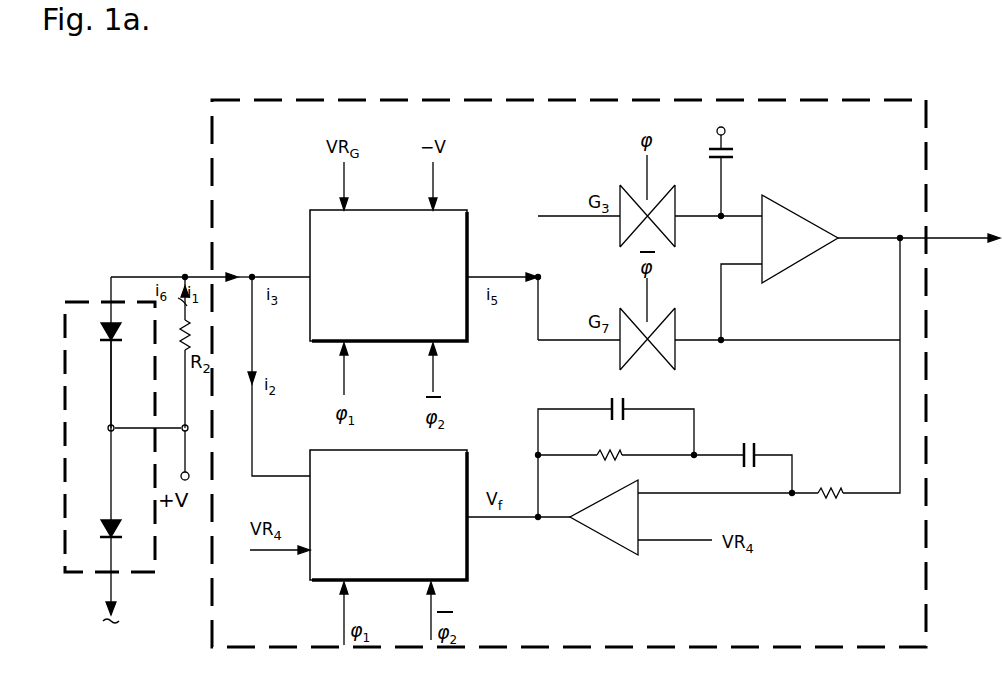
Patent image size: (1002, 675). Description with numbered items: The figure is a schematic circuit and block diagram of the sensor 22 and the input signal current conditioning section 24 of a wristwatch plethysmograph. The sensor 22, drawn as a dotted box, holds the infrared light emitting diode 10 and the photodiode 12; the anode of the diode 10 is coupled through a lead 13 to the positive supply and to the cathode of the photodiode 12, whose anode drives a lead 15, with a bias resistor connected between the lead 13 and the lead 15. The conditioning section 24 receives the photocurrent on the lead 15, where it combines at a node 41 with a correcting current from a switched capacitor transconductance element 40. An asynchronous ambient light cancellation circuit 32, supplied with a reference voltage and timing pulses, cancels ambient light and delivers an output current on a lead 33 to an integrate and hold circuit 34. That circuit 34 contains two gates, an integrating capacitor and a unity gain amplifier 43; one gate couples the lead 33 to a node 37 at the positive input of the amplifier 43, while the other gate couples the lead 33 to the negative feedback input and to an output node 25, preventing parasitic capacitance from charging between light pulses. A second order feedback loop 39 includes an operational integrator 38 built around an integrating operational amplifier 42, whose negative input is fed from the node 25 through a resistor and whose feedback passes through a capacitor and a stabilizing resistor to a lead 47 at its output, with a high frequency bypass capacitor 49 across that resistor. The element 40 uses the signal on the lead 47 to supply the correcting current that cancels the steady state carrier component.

The infrared light emitting diode 10 is at (117, 519).
The photodiode 12 is at (118, 341).
The lead 13 is at (110, 384).
The lead 15 is at (198, 275).
The sensor 22 is at (65, 302).
The input signal current conditioning section 24 is at (928, 100).
The node 25 is at (897, 241).
The asynchronous ambient light cancellation circuit 32 is at (463, 217).
The lead 33 is at (477, 277).
The integrate and hold circuit 34 is at (748, 297).
The node 37 is at (716, 222).
The operational integrator 38 is at (560, 390).
The second order feedback loop 39 is at (912, 465).
The switched capacitor transconductance element 40 is at (470, 579).
The node 41 is at (256, 274).
The integrating operational amplifier 42 is at (608, 528).
The unity gain amplifier 43 is at (805, 226).
The lead 47 is at (536, 521).
The high frequency bypass capacitor 49 is at (625, 405).